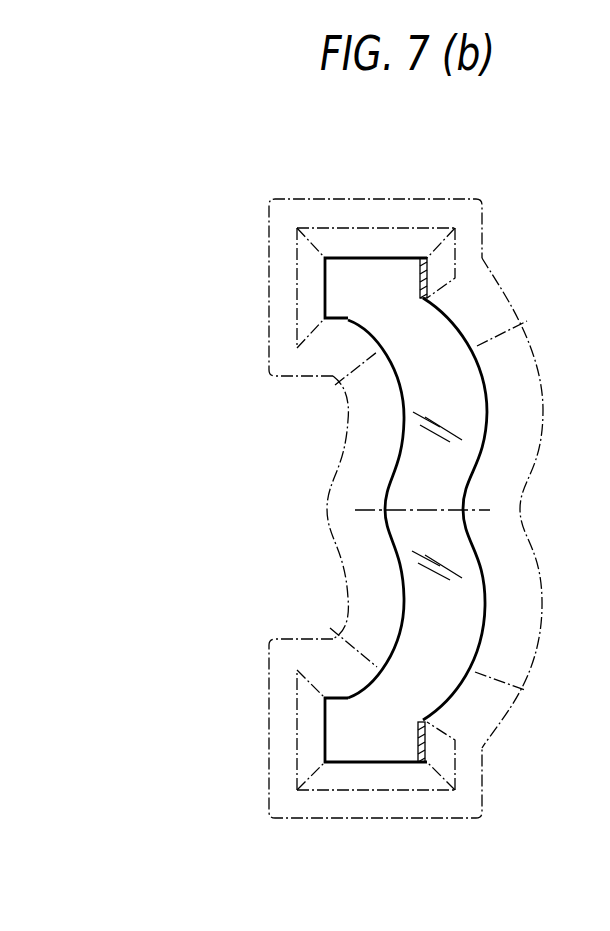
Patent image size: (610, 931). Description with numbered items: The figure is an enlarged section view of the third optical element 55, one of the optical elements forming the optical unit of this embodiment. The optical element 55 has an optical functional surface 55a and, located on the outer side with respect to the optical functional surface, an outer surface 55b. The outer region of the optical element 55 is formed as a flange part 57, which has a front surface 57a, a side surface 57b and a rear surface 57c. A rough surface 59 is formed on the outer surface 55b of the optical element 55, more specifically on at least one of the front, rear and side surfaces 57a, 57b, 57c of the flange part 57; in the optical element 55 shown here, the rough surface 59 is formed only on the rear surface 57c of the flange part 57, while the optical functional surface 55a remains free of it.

The third optical element 55 is at (247, 225).
The optical functional surface 55a is at (331, 547).
The outer surface 55b is at (380, 198).
The flange part 57 is at (337, 268).
The front surface of flange part 57a is at (297, 277).
The side surface of flange part 57b is at (421, 229).
The rear surface of flange part 57c is at (482, 235).
The rough surface 59 is at (427, 276).